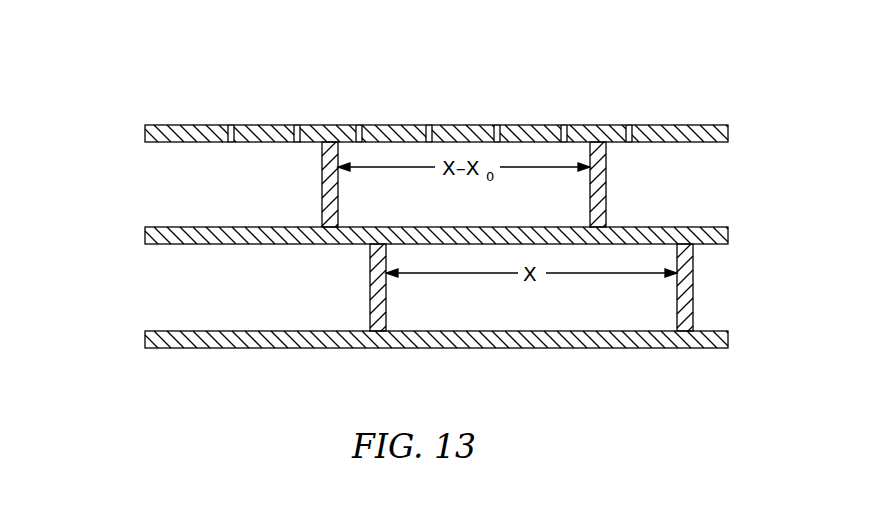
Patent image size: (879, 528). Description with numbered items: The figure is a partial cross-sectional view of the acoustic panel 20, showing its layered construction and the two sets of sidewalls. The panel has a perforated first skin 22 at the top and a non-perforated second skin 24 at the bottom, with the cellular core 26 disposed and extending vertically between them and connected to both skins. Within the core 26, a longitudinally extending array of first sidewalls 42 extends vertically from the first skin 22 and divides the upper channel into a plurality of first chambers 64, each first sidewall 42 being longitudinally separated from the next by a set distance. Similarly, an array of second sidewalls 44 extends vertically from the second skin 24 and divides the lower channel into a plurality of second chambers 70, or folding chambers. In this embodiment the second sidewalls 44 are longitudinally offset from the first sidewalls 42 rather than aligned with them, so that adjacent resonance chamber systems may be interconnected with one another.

The acoustic panel 20 is at (737, 90).
The first skin 22 is at (130, 129).
The second skin 24 is at (130, 346).
The cellular core 26 is at (129, 140).
The first sidewalls 42 is at (338, 157).
The second sidewalls 44 is at (386, 311).
The first chambers 64 is at (445, 194).
The second chambers 70 is at (380, 301).